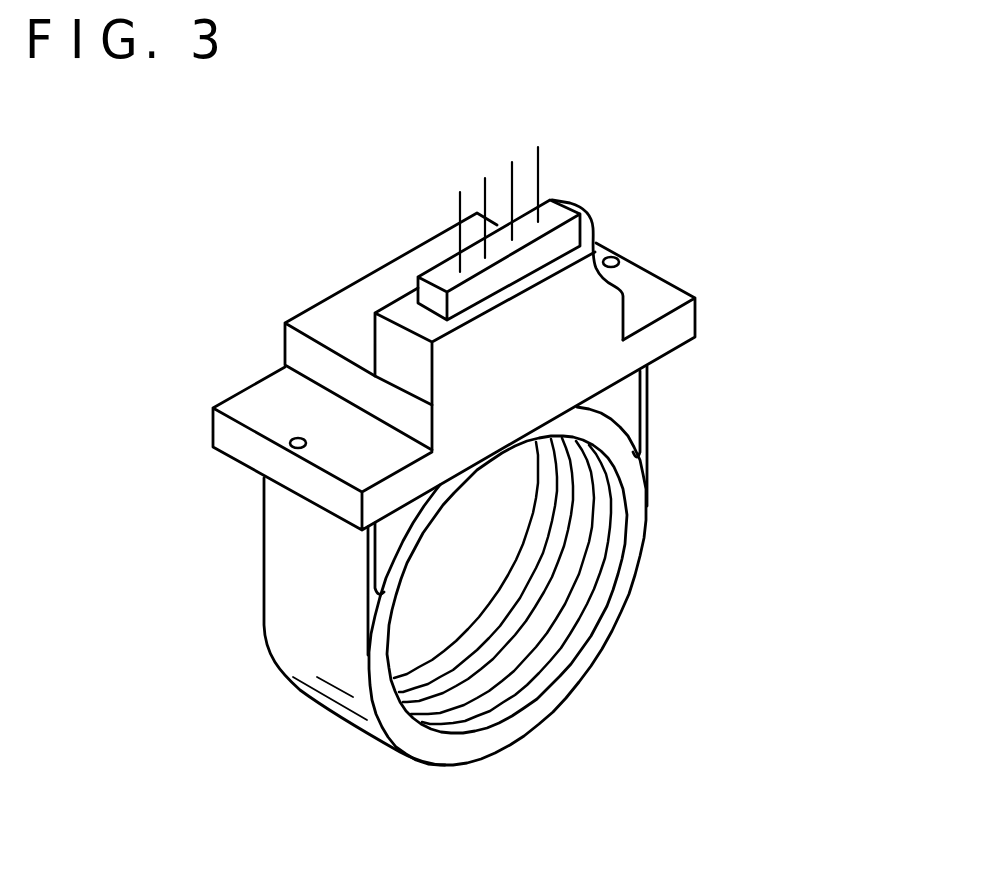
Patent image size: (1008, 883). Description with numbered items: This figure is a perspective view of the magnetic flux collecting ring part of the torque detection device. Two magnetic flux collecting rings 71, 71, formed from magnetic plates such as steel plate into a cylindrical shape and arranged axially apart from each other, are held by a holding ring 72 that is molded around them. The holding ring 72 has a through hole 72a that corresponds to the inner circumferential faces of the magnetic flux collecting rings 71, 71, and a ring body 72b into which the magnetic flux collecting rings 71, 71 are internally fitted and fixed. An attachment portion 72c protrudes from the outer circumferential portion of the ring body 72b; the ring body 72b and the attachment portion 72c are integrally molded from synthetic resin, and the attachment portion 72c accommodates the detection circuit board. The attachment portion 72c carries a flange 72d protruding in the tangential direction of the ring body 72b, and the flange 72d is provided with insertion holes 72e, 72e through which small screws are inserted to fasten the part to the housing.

The magnetic flux collecting ring 71 is at (523, 594).
The holding ring 72 is at (662, 479).
The through hole 72a is at (581, 626).
The ring body 72b is at (503, 736).
The attachment portion 72c is at (568, 347).
The flange 72d is at (697, 284).
The insertion hole 72e is at (614, 254).